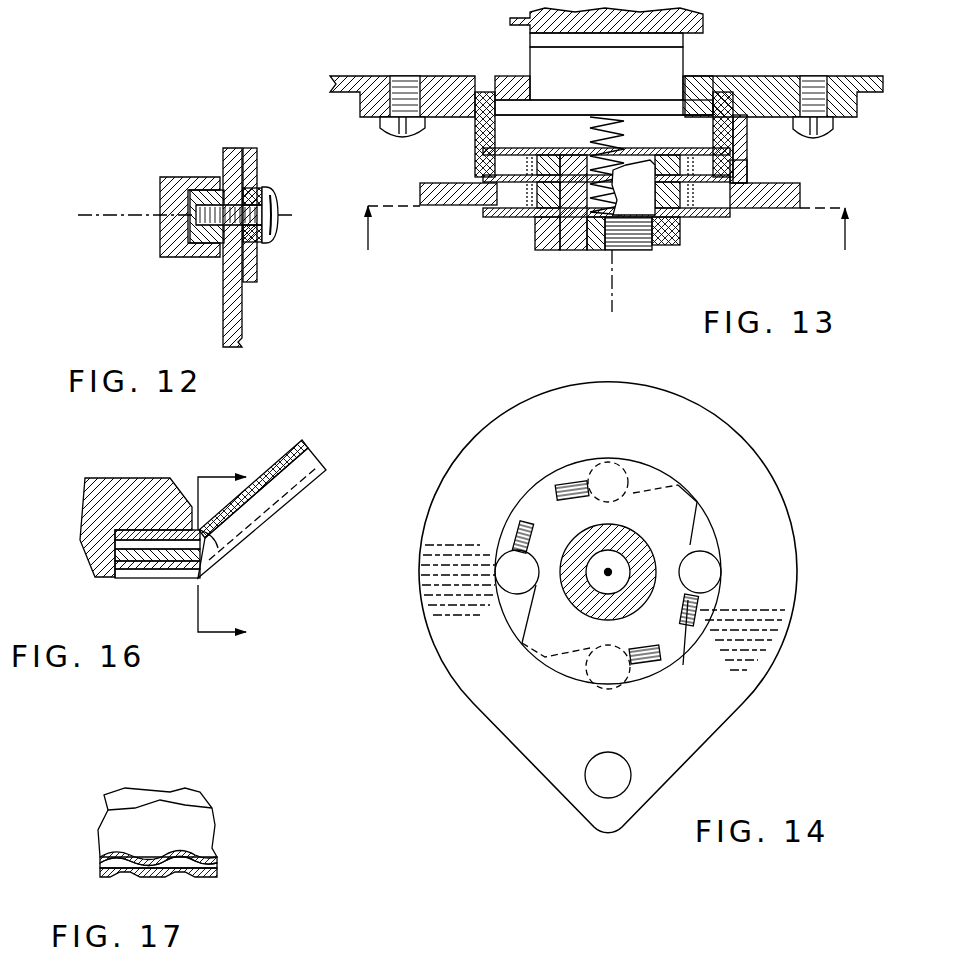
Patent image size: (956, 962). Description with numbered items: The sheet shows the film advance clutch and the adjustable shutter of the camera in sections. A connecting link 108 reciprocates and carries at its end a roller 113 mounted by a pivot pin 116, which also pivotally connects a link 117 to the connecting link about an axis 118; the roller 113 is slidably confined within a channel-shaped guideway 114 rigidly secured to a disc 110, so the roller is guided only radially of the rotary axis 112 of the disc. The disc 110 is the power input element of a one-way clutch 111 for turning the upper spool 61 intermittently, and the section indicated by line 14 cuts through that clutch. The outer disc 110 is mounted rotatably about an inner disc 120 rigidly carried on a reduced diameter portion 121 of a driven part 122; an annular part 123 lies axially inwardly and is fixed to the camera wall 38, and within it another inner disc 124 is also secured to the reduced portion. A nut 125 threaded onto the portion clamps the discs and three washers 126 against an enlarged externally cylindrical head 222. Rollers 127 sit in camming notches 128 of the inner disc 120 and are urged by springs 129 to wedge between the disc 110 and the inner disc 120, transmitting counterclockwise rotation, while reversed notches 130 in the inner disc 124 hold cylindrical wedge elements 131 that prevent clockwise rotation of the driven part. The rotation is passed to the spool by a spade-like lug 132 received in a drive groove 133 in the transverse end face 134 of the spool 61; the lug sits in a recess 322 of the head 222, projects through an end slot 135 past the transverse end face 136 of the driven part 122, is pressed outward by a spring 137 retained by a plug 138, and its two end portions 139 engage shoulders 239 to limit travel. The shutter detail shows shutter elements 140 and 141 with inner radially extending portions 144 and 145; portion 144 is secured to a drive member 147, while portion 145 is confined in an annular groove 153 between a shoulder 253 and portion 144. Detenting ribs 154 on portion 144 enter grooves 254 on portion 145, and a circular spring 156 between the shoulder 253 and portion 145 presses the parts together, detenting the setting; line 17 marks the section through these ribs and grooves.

In FIG. 13, the wall 38 is at (349, 76).
In FIG. 13, the upper spool 61 is at (704, 22).
In FIG. 12, the connecting link 108 is at (228, 148).
In FIG. 13, the disc 110 is at (800, 192).
In FIG. 14, the disc 110 is at (727, 717).
In FIG. 13, the one-way clutch 111 is at (473, 233).
In FIG. 14, the one-way clutch 111 is at (737, 605).
In FIG. 13, the axis 112 is at (613, 287).
In FIG. 14, the axis 112 is at (610, 570).
In FIG. 12, the roller 113 is at (203, 190).
In FIG. 12, the channel-shaped guideway 114 is at (172, 257).
In FIG. 12, the pivot pin 116 is at (240, 243).
In FIG. 12, the link 117 is at (252, 158).
In FIG. 12, the axis 118 is at (108, 214).
In FIG. 13, the inner disc 120 is at (682, 203).
In FIG. 14, the inner disc 120 is at (538, 493).
In FIG. 13, the reduced diameter portion 121 is at (658, 242).
In FIG. 13, the driven part 122 is at (688, 122).
In FIG. 13, the annular part 123 is at (486, 152).
In FIG. 13, the inner disc 124 is at (668, 160).
In FIG. 13, the nut 125 is at (548, 251).
In FIG. 13, the washers 126 is at (480, 183).
In FIG. 13, the rollers 127 is at (731, 197).
In FIG. 14, the rollers 127 is at (703, 560).
In FIG. 14, the notches 128 is at (693, 521).
In FIG. 14, the springs 129 is at (682, 628).
In FIG. 14, the notches 130 is at (555, 660).
In FIG. 14, the cylindrical wedge elements 131 is at (584, 677).
In FIG. 13, the lug 132 is at (684, 63).
In FIG. 13, the drive groove 133 is at (537, 39).
In FIG. 13, the transverse end face 134 is at (596, 48).
In FIG. 13, the end slot 135 is at (683, 100).
In FIG. 13, the transverse end face 136 is at (520, 89).
In FIG. 13, the spring 137 is at (590, 129).
In FIG. 13, the plug 138 is at (598, 252).
In FIG. 13, the end portions 139 is at (510, 100).
In FIG. 16, the shutter element 140 is at (298, 498).
In FIG. 17, the shutter element 140 is at (150, 800).
In FIG. 16, the shutter element 141 is at (295, 462).
In FIG. 17, the shutter element 141 is at (205, 818).
In FIG. 16, the inner radially extending portion 144 is at (145, 574).
In FIG. 17, the inner radially extending portion 144 is at (104, 873).
In FIG. 16, the inner radially extending portion 145 is at (185, 565).
In FIG. 17, the inner radially extending portion 145 is at (210, 857).
In FIG. 16, the drive member 147 is at (110, 478).
In FIG. 16, the annular groove 153 is at (210, 538).
In FIG. 17, the detenting ribs 154 is at (190, 880).
In FIG. 16, the circular spring 156 is at (145, 530).
In FIG. 13, the enlarged head 222 is at (497, 122).
In FIG. 13, the shoulders 239 is at (510, 102).
In FIG. 16, the shoulder 253 is at (130, 548).
In FIG. 17, the grooves 254 is at (128, 878).
In FIG. 13, the recess 322 is at (510, 122).
In FIG. 13, the section line 14 is at (607, 235).
In FIG. 16, the section line 17 is at (228, 560).